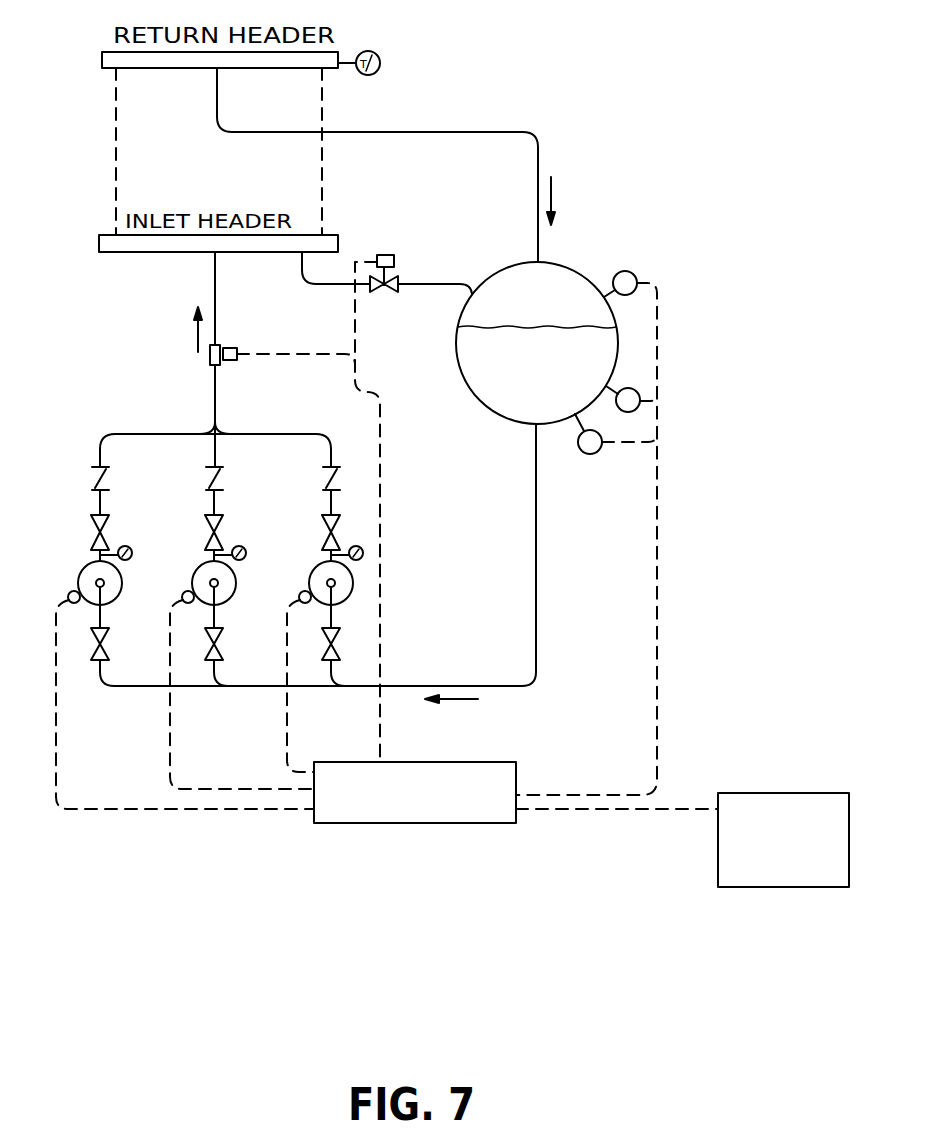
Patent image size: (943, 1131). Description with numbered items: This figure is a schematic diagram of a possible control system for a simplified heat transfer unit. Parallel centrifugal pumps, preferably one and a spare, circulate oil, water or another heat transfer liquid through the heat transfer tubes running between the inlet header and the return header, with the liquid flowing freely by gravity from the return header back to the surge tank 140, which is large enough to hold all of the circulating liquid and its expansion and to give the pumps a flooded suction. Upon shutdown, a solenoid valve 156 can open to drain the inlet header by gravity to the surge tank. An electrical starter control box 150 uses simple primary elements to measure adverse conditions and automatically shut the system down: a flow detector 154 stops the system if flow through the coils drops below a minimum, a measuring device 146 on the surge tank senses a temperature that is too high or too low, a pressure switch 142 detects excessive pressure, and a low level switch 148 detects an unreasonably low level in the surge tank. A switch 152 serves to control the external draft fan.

The surge tank 140 is at (612, 340).
The pressure switch 142 is at (631, 272).
The measuring device 146 is at (636, 392).
The low level switch 148 is at (593, 454).
The starter and control box 150 is at (493, 771).
The switch 152 is at (808, 800).
The detector 154 is at (208, 362).
The solenoid valve 156 is at (394, 261).